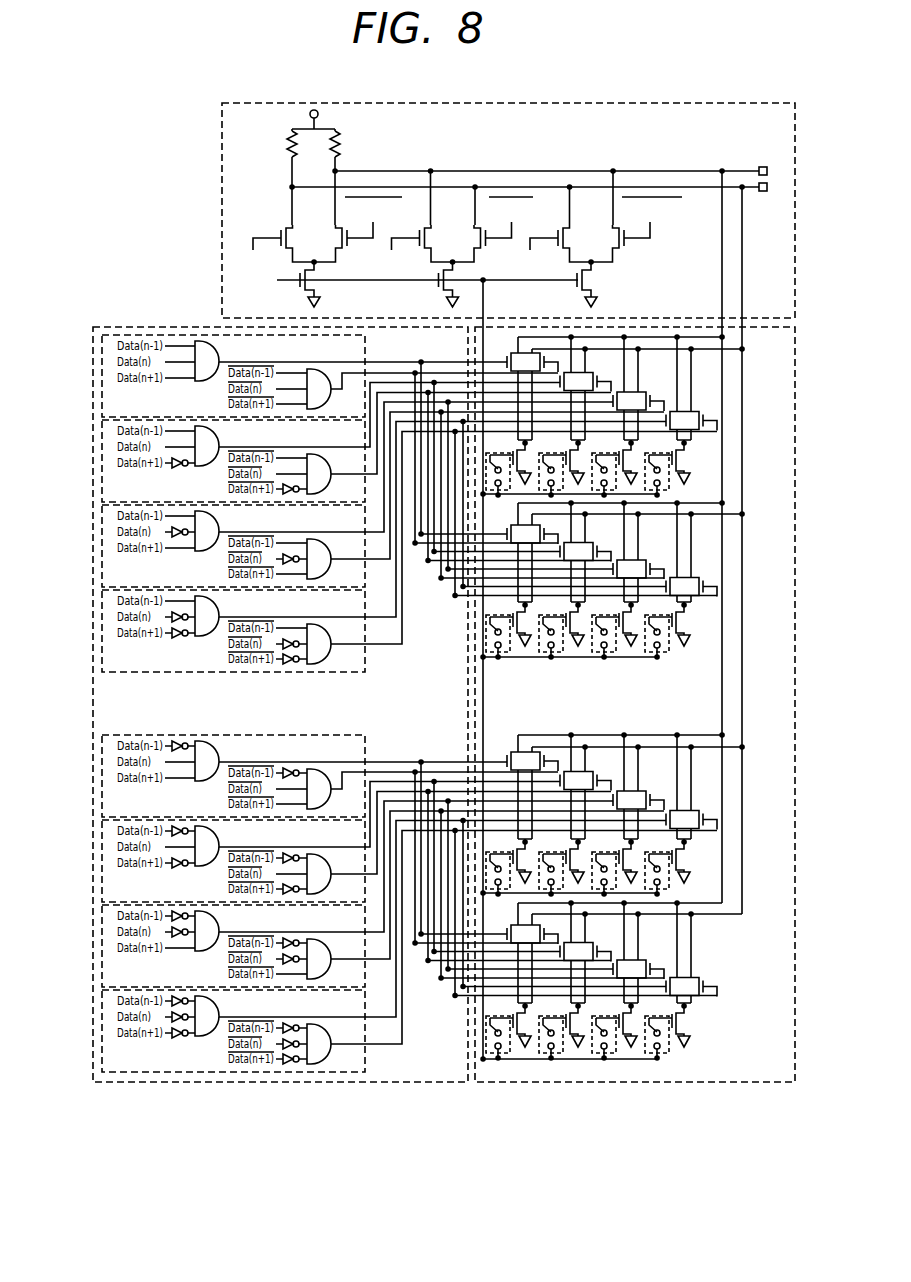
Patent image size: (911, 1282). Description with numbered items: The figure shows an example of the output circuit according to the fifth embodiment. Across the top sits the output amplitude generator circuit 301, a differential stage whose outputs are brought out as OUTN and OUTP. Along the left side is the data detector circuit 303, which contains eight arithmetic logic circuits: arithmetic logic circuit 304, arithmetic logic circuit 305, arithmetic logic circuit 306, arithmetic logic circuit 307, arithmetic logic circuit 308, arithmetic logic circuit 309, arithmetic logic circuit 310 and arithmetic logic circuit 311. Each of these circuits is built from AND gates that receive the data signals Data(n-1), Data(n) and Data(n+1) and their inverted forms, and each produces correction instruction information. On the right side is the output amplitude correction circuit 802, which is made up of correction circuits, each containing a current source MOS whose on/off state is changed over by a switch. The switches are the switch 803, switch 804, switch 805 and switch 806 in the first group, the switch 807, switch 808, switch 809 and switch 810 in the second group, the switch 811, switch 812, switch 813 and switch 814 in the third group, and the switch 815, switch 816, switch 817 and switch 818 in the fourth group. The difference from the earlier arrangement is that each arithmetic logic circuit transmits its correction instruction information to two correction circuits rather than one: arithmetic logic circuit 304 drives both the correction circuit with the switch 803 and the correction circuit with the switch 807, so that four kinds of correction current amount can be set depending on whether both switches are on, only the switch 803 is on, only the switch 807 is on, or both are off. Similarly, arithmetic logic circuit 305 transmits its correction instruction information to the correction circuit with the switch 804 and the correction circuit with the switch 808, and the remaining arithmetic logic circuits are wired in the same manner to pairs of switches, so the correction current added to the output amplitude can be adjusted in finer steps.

The output amplitude generator circuit 301 is at (710, 103).
The data detector circuit 303 is at (157, 327).
The arithmetic logic circuit 304 is at (196, 376).
The arithmetic logic circuit 305 is at (196, 461).
The arithmetic logic circuit 306 is at (196, 546).
The arithmetic logic circuit 307 is at (196, 631).
The arithmetic logic circuit 308 is at (196, 776).
The arithmetic logic circuit 309 is at (196, 861).
The arithmetic logic circuit 310 is at (196, 946).
The arithmetic logic circuit 311 is at (196, 1031).
The output amplitude correction circuit 802 is at (620, 1083).
The switch 803 is at (490, 453).
The switch 804 is at (543, 453).
The switch 805 is at (596, 453).
The switch 806 is at (649, 453).
The switch 807 is at (490, 617).
The switch 808 is at (544, 616).
The switch 809 is at (597, 616).
The switch 810 is at (650, 616).
The switch 811 is at (491, 852).
The switch 812 is at (544, 853).
The switch 813 is at (597, 853).
The switch 814 is at (650, 853).
The switch 815 is at (490, 1017).
The switch 816 is at (544, 1017).
The switch 817 is at (597, 1017).
The switch 818 is at (650, 1017).